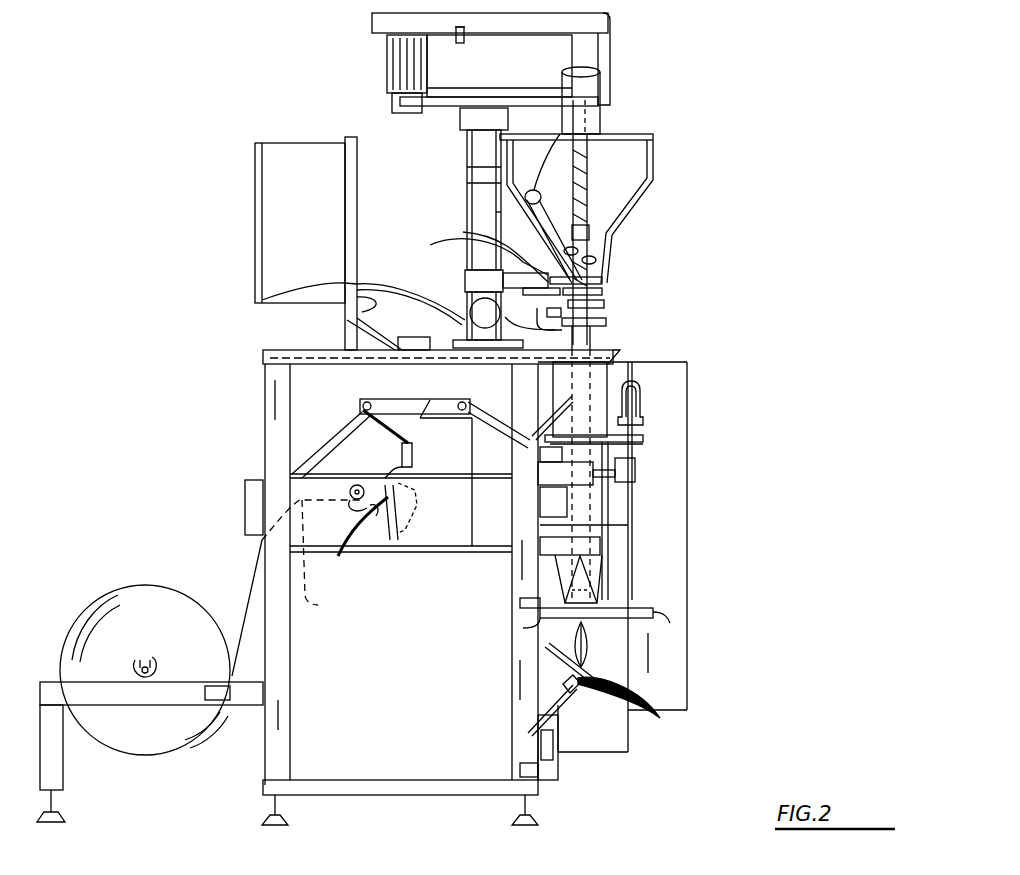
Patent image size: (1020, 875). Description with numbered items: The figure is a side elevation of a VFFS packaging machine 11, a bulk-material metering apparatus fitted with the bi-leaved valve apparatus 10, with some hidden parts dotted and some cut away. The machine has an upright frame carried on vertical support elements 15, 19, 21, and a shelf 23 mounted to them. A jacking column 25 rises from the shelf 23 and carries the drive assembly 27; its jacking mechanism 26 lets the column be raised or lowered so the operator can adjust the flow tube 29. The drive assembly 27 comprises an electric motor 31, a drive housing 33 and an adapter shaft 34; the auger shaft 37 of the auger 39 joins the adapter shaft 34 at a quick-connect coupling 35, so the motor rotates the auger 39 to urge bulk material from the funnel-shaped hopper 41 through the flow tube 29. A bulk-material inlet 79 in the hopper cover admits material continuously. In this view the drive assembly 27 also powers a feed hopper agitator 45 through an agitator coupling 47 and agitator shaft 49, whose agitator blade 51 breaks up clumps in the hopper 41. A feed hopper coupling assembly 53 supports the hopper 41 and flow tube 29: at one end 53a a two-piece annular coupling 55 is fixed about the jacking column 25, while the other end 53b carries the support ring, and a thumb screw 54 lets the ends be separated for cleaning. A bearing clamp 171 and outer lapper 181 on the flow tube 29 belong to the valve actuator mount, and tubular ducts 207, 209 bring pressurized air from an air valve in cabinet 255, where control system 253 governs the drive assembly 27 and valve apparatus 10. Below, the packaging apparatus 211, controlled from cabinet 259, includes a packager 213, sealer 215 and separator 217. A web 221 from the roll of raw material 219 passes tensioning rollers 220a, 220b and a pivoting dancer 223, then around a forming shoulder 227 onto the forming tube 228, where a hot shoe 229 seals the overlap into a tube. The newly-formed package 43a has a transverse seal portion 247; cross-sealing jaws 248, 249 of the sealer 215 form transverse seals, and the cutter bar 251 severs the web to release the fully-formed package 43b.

The drive assembly 27 is at (626, 22).
The electric motor 31 is at (387, 52).
The drive housing 33 is at (490, 68).
The bulk-material inlet 79 is at (592, 72).
The jacking column 25 is at (467, 162).
The agitator shaft 49 is at (467, 167).
The agitator blade 51 is at (467, 183).
The feed hopper agitator 45 is at (501, 212).
The adapter shaft 34 is at (600, 155).
The agitator coupling 47 is at (590, 135).
The hopper 41 is at (650, 194).
The coupling 35 is at (590, 231).
The auger shaft 37 is at (597, 253).
The coupling assembly end 53b is at (604, 287).
The flow tube 29 is at (606, 304).
The bearing clamp 171 is at (607, 313).
The outer lapper 181 is at (606, 322).
The auger 39 is at (597, 338).
The cabinet 255 is at (345, 152).
The control system 253 is at (300, 200).
The VFFS packaging machine 11 is at (195, 233).
The feed hopper coupling assembly 53 is at (437, 258).
The coupling assembly end 53a is at (488, 249).
The two-piece annular coupling 55 is at (465, 274).
The thumb screw 54 is at (478, 302).
The tubular duct 209 is at (262, 300).
The tubular duct 207 is at (347, 318).
The jacking mechanism 26 is at (462, 330).
The shelf 23 is at (295, 353).
The support element 21 is at (281, 636).
The support element 15 is at (513, 712).
The support element 19 is at (285, 750).
The cabinet 259 is at (675, 460).
The bi-leaved valve apparatus 10 is at (707, 448).
The packaging apparatus 211 is at (506, 559).
The tensioning roller 220b is at (372, 400).
The forming shoulder 227 is at (530, 402).
The web of packaging material 221 is at (380, 432).
The dancer 223 is at (368, 552).
The tensioning roller 220a is at (321, 558).
The roll of raw material 219 is at (117, 606).
The packager 213 is at (655, 418).
The forming tube 228 is at (608, 530).
The hot shoe 229 is at (642, 517).
The sealer apparatus 215 is at (649, 582).
The separator apparatus 217 is at (665, 609).
The cutter bar 251 is at (655, 624).
The cross-sealing jaw 248 is at (520, 601).
The cross-sealing jaw 249 is at (523, 628).
The newly-formed package 43a is at (590, 640).
The transverse portion 247 is at (582, 678).
The fully-formed package 43b is at (630, 710).